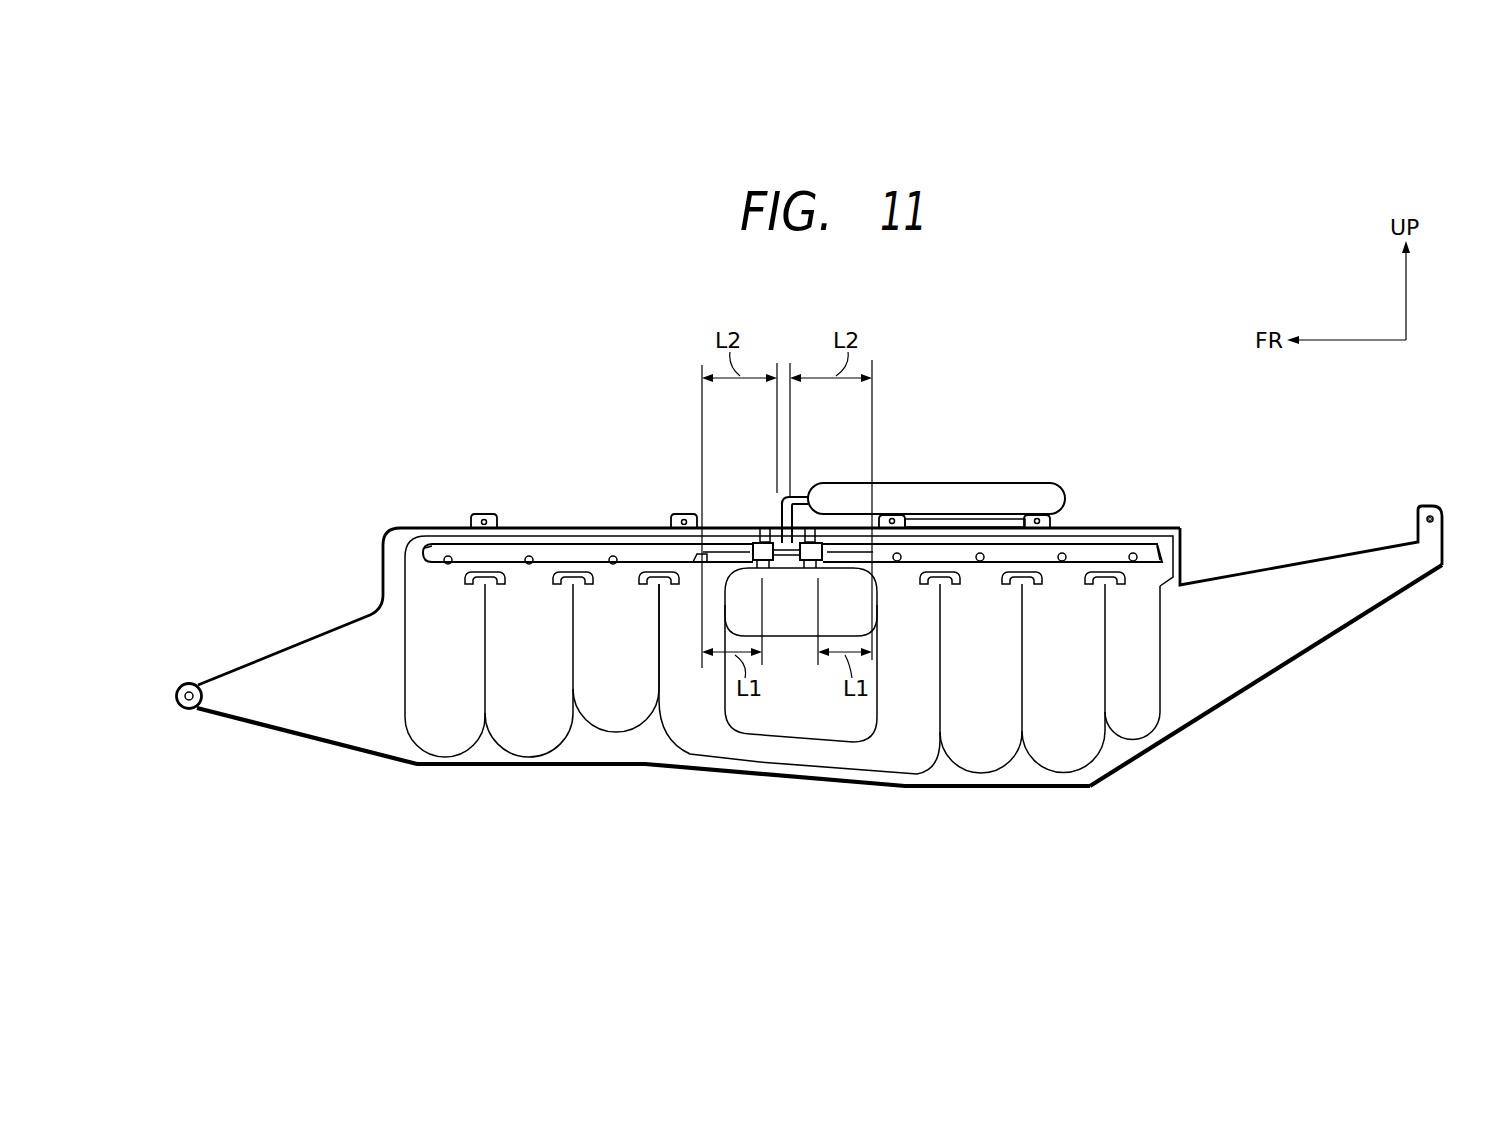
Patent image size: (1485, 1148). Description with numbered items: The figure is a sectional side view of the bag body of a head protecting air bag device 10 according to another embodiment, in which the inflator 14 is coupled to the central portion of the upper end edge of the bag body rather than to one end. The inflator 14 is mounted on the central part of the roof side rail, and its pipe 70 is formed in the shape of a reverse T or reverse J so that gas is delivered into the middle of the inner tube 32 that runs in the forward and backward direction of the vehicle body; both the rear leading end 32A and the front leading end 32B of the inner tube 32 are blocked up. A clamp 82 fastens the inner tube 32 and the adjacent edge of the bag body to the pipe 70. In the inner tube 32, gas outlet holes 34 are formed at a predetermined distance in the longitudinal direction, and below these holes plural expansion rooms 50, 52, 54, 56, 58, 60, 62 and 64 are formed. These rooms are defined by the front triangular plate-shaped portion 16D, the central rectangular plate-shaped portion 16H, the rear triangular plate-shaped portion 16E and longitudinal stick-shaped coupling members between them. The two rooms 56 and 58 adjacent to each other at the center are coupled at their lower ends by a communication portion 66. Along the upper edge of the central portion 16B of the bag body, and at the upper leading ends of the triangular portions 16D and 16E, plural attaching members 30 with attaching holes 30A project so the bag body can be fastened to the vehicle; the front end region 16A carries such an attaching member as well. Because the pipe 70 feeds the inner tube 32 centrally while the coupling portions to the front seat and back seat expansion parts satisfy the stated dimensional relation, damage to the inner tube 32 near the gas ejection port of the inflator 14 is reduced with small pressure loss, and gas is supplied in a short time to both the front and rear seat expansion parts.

The head protecting air bag device 10 is at (1145, 505).
The inflator 14 is at (892, 482).
The front end portion of airbag 16A is at (192, 710).
The central portion of the bag body 16B is at (548, 527).
The front triangular plate-shaped portion 16D is at (310, 733).
The rear triangular plate-shaped portion 16E is at (1318, 626).
The central rectangular plate-shaped portion 16H is at (765, 726).
The attaching member 30 is at (477, 514).
The attaching hole 30A is at (484, 519).
The inner tube 32 is at (612, 534).
The rear leading end of the inner tube 32A is at (1160, 548).
The front leading end of the inner tube 32B is at (426, 548).
The gas outlet hole 34 is at (447, 566).
The expansion room 50 is at (457, 746).
The expansion room 52 is at (543, 749).
The expansion room 54 is at (620, 733).
The expansion room 56 is at (697, 746).
The expansion room 58 is at (913, 754).
The expansion room 60 is at (982, 758).
The expansion room 62 is at (1065, 756).
The expansion room 64 is at (1135, 726).
The communication portion 66 is at (868, 761).
The pipe 70 is at (783, 499).
The clamp 82 is at (768, 573).